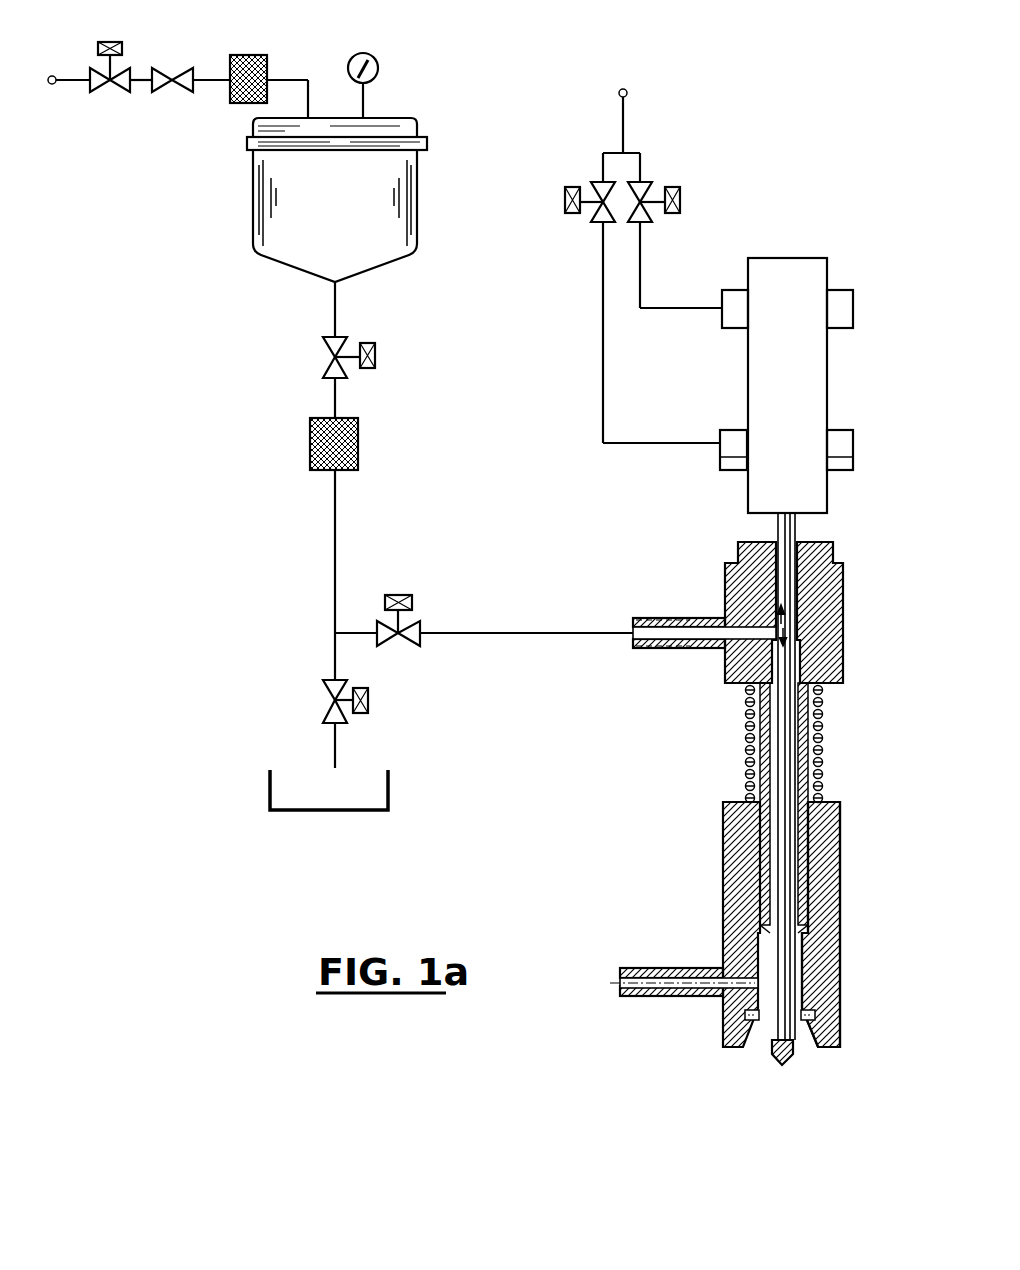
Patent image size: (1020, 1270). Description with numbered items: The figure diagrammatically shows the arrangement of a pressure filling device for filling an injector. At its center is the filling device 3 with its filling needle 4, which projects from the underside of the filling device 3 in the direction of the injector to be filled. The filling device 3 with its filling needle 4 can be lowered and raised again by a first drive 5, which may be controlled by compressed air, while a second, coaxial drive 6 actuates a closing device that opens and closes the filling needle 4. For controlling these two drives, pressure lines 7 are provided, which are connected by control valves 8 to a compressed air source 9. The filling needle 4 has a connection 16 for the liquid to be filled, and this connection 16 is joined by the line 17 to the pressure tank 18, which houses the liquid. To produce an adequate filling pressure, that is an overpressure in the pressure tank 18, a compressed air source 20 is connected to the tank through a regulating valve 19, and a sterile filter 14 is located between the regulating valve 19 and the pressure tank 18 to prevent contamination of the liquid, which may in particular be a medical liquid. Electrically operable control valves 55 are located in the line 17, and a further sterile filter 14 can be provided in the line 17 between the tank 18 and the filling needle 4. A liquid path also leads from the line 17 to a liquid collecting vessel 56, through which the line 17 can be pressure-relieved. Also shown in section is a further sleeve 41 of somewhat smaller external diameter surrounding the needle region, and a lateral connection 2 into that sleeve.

The carrier gas inlet tube 2 is at (632, 968).
The filling device 3 is at (843, 610).
The filling needle 4 is at (768, 1057).
The first drive 5 is at (848, 445).
The second, coaxial drive 6 is at (847, 313).
The pressure lines 7 is at (668, 440).
The control valves 8 is at (575, 243).
The compressed air source 9 is at (624, 83).
The sterile filter 14 is at (247, 55).
The connection 16 is at (665, 648).
The line 17 is at (521, 630).
The pressure tank 18 is at (285, 256).
The regulating valve 19 is at (173, 92).
The compressed air source 20 is at (52, 75).
The further sleeve 41 is at (735, 870).
The control valves 55 is at (386, 358).
The liquid collecting vessel 56 is at (330, 806).